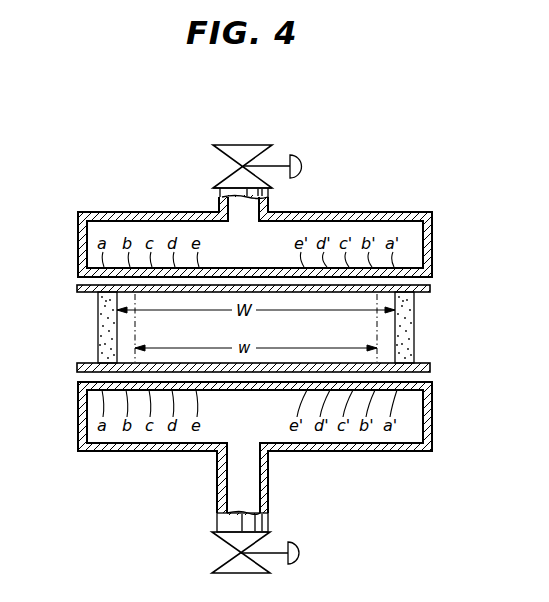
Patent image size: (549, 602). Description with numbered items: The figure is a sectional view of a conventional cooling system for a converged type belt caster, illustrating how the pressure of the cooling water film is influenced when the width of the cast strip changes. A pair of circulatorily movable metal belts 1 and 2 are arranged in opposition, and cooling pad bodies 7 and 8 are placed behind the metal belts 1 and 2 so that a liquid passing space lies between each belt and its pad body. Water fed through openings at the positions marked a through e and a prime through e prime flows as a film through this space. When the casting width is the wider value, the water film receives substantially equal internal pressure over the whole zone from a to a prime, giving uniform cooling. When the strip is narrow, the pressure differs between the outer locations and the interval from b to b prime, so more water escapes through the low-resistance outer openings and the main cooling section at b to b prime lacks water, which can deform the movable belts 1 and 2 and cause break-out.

The movable metal belt 1 is at (77, 289).
The movable metal belt 2 is at (432, 368).
The cooling pad body 7 is at (348, 213).
The cooling pad body 8 is at (353, 451).